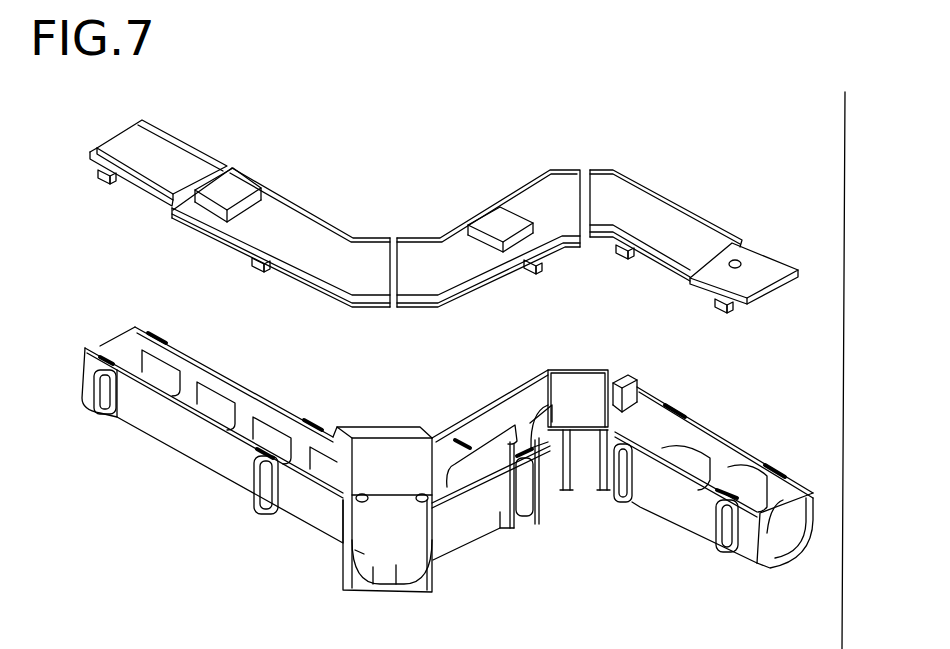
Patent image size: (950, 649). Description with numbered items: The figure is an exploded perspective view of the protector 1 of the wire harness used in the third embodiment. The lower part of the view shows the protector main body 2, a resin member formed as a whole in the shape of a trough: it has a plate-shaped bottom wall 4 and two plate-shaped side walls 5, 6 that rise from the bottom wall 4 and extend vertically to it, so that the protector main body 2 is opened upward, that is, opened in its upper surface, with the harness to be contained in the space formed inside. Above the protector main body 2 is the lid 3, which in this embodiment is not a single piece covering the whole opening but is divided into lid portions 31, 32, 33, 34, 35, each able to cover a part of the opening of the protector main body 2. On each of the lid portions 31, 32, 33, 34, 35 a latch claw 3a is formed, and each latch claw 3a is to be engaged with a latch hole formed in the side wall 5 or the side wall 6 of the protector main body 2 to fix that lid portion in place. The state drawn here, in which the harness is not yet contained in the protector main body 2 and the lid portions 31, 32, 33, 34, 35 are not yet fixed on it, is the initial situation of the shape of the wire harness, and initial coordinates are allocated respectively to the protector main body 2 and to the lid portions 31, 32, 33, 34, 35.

The protector 1 is at (749, 166).
The protector main body 2 is at (413, 430).
The lid 3 is at (287, 212).
The latch claw 3a is at (102, 176).
The lid portion 31 is at (178, 155).
The lid portion 32 is at (333, 243).
The lid portion 33 is at (537, 195).
The lid portion 34 is at (645, 210).
The lid portion 35 is at (763, 268).
The bottom wall 4 is at (780, 562).
The side wall 5 is at (183, 433).
The side wall 6 is at (517, 368).